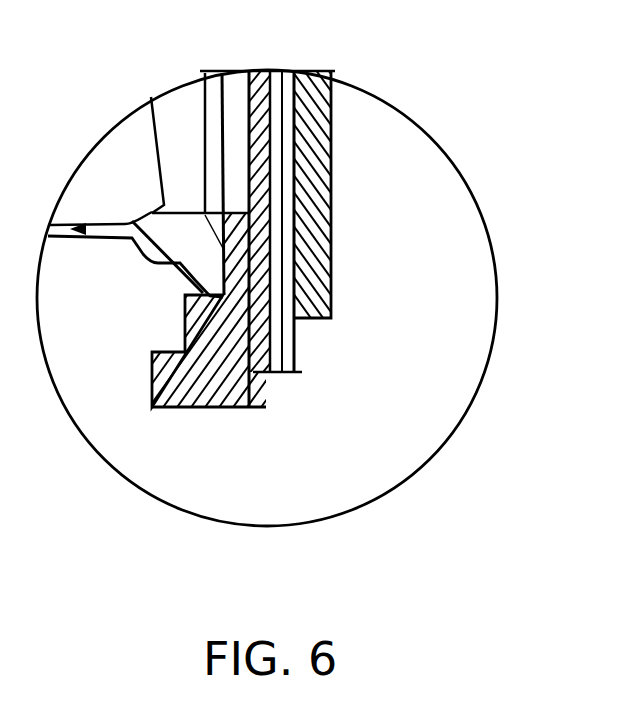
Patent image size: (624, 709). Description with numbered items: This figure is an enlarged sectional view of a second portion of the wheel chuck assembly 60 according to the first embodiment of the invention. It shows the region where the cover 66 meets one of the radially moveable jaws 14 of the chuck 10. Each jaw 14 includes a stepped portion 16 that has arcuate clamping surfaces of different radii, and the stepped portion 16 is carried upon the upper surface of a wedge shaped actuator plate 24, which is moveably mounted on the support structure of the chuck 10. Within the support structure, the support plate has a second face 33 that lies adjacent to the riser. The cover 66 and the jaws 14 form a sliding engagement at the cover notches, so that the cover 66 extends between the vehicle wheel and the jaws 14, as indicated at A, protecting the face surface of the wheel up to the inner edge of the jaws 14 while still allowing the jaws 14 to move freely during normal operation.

The wheel lathe chuck 10 is at (380, 316).
The jaw 14 is at (218, 428).
The stepped portion 16 is at (152, 390).
The actuator plate 24 is at (262, 372).
The second face 33 is at (332, 250).
The wheel chuck assembly 60 is at (482, 102).
The cover 66 is at (226, 70).
The cover extension between wheel and jaws A is at (200, 246).